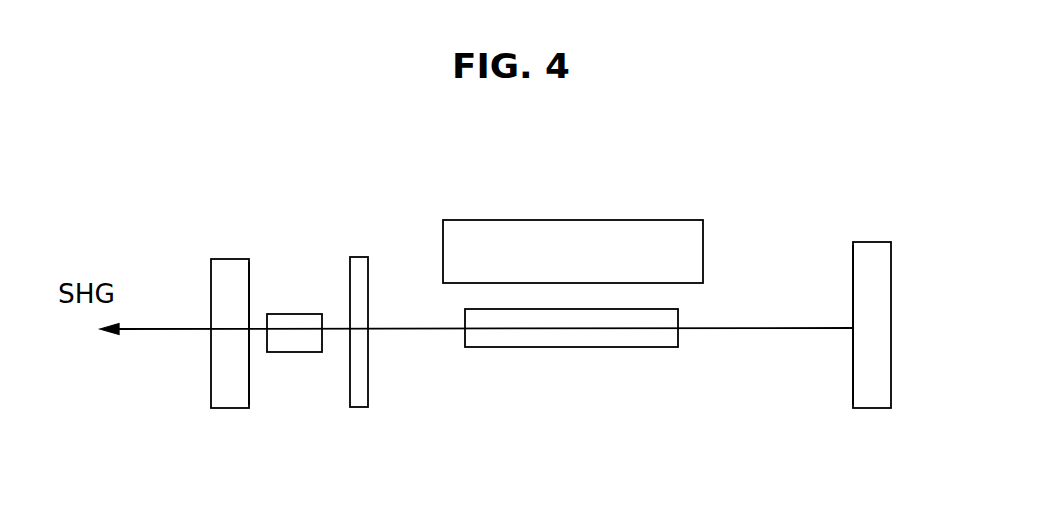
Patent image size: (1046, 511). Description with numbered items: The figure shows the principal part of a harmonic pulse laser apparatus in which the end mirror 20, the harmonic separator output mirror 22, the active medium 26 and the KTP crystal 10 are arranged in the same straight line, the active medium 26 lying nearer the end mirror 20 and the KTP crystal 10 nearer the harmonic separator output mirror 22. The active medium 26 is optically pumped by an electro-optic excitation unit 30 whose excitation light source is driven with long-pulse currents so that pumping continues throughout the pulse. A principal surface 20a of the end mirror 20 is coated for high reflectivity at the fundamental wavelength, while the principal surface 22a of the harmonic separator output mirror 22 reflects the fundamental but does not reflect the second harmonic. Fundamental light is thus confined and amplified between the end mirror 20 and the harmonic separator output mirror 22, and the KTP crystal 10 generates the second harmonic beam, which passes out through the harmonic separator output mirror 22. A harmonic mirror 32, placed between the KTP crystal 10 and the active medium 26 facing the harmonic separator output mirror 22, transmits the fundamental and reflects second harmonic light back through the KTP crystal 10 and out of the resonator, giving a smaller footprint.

The KTP crystal 10 is at (293, 352).
The end mirror 20 is at (867, 245).
The principal surface of the end mirror 20a is at (853, 370).
The harmonic separator output mirror 22 is at (228, 259).
The principal surface of the harmonic separator output mirror 22a is at (253, 285).
The active medium 26 is at (578, 337).
The electro-optic excitation unit 30 is at (580, 220).
The harmonic mirror 32 is at (362, 288).